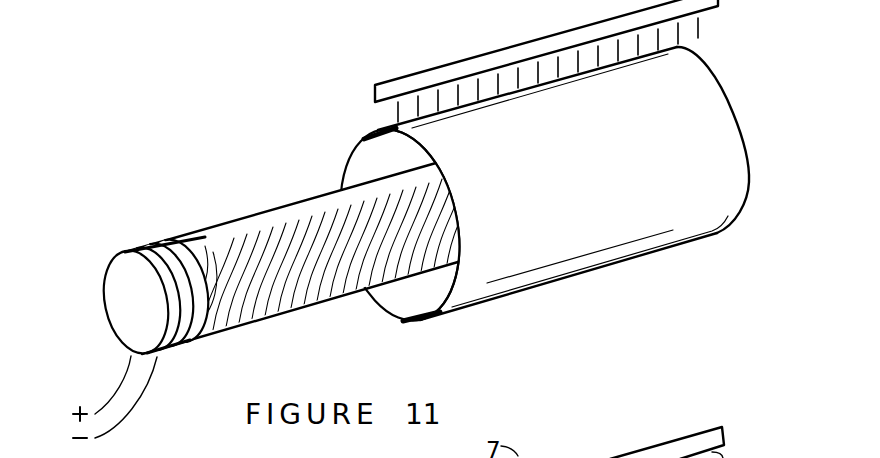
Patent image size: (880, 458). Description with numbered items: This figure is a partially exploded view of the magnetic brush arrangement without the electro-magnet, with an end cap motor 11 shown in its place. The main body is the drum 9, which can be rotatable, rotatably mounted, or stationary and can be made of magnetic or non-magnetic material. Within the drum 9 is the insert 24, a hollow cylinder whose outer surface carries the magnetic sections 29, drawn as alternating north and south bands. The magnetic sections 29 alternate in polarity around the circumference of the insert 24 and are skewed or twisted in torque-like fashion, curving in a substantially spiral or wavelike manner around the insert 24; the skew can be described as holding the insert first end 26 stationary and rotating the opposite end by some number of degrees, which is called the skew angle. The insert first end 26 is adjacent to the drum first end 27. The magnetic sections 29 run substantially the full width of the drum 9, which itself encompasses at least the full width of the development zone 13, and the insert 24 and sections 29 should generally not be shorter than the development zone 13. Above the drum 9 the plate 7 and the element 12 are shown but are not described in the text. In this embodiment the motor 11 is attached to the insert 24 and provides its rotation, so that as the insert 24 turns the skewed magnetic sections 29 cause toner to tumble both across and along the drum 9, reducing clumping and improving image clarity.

The magnetic plate 7 is at (484, 55).
The drum 9 is at (437, 206).
The motor 11 is at (120, 313).
The sensor array 12 is at (539, 73).
The development zone 13 is at (397, 108).
The insert 24 is at (303, 259).
The insert first end 26 is at (162, 240).
The drum first end 27 is at (417, 323).
The magnetic section 29 is at (258, 308).